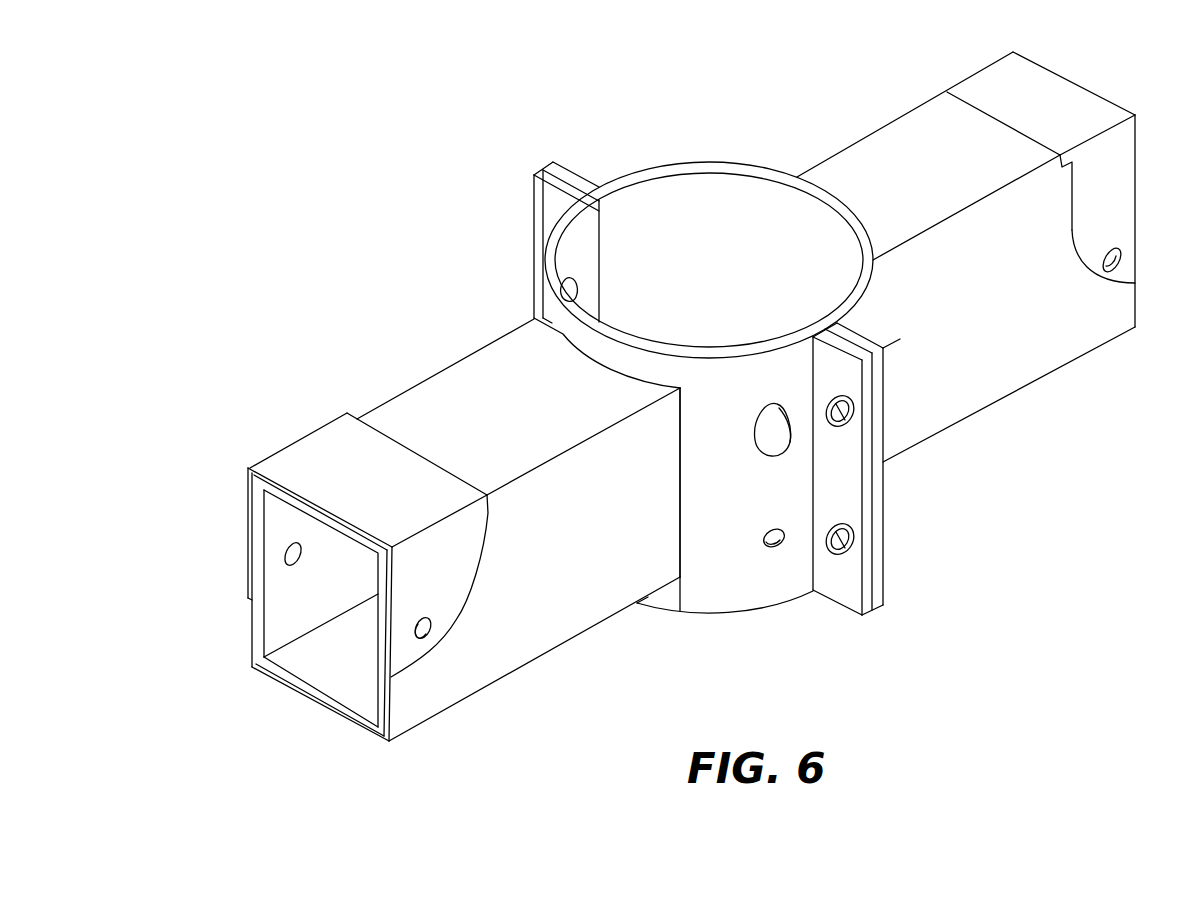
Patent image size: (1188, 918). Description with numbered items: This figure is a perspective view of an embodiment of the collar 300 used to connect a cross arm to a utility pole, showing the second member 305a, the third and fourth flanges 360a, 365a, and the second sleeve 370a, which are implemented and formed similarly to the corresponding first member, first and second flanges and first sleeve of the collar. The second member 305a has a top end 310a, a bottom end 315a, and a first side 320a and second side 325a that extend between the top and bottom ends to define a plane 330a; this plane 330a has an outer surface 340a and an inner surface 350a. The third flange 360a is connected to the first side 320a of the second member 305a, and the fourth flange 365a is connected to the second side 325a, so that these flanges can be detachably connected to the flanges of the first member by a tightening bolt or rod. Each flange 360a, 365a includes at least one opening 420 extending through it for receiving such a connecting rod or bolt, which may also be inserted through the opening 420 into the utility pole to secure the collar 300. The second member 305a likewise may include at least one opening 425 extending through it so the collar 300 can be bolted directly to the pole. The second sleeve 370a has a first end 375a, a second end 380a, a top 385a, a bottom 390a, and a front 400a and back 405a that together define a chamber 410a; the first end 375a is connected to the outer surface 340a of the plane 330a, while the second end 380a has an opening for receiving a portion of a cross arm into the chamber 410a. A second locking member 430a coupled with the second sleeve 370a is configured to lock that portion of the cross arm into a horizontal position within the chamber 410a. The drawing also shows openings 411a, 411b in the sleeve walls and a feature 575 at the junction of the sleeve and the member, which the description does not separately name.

The collar 300 is at (330, 232).
The second member 305a is at (725, 632).
The top end 310a is at (709, 260).
The bottom end 315a is at (642, 635).
The first side 320a is at (709, 260).
The second side 325a is at (806, 317).
The plane 330a is at (754, 570).
The outer surface 340a is at (648, 346).
The inner surface 350a is at (640, 261).
The third flange 360a is at (522, 242).
The fourth flange 365a is at (895, 469).
The second sleeve 370a is at (458, 650).
The first end 375a is at (445, 358).
The second end 380a is at (320, 710).
The top 385a is at (417, 415).
The bottom 390a is at (338, 717).
The front 400a is at (587, 556).
The back 405a is at (275, 602).
The chamber 410a is at (362, 670).
The first aperture 411a is at (234, 548).
The second aperture 411b is at (467, 635).
The opening 420 is at (889, 472).
The opening 425 is at (796, 442).
The second locking member 430a is at (369, 531).
The joint seam 575 is at (708, 482).